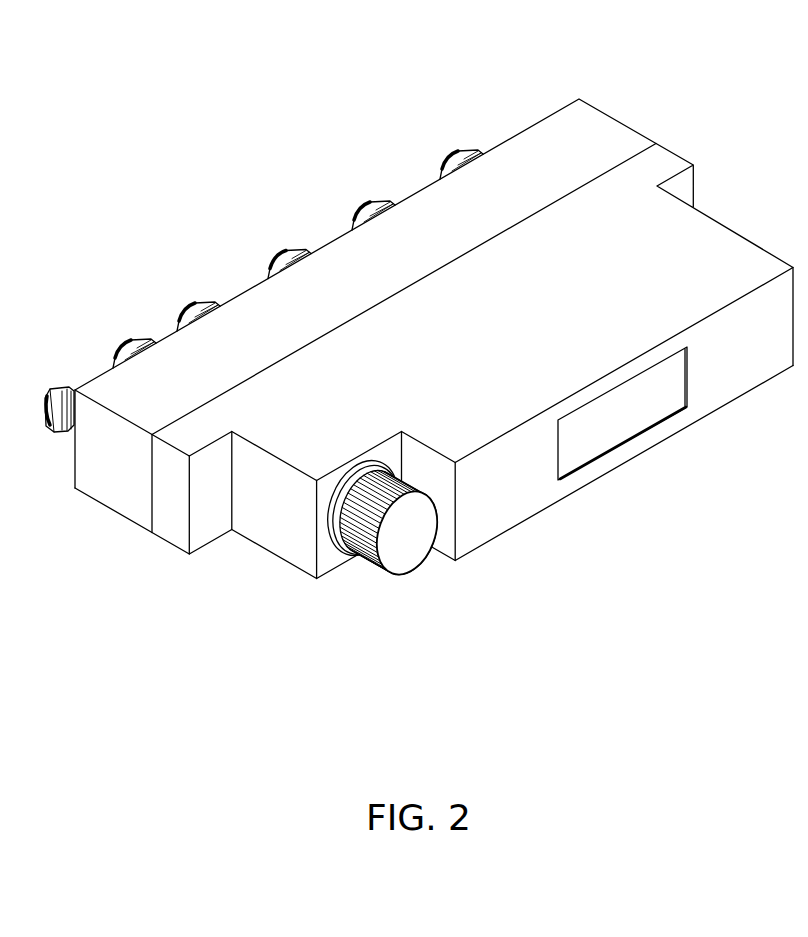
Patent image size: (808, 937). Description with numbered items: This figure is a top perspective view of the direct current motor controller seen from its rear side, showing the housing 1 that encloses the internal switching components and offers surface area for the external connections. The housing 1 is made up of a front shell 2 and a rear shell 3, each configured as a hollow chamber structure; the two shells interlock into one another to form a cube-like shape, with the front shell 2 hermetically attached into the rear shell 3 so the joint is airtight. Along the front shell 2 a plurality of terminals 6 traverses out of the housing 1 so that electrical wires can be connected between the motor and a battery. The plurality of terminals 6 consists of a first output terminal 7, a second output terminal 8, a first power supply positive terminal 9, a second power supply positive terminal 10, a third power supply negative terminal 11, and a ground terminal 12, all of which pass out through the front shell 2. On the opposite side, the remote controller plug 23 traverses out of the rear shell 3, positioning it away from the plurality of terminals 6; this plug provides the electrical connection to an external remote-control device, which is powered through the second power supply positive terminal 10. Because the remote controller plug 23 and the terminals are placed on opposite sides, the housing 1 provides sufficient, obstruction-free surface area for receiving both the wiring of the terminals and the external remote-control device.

The housing 1 is at (410, 322).
The front shell 2 is at (596, 118).
The rear shell 3 is at (729, 238).
The plurality of terminals 6 is at (255, 262).
The first output terminal 7 is at (455, 135).
The second output terminal 8 is at (191, 289).
The first power supply positive terminal 9 is at (364, 188).
The second power supply positive terminal 10 is at (280, 236).
The third power supply negative terminal 11 is at (127, 324).
The ground terminal 12 is at (64, 390).
The remote controller plug 23 is at (345, 551).